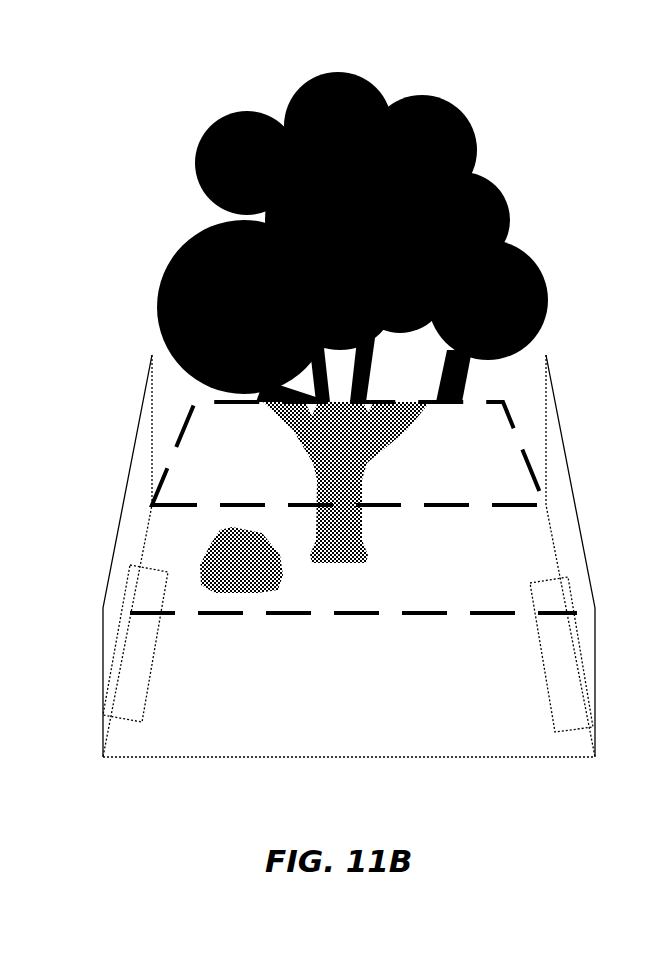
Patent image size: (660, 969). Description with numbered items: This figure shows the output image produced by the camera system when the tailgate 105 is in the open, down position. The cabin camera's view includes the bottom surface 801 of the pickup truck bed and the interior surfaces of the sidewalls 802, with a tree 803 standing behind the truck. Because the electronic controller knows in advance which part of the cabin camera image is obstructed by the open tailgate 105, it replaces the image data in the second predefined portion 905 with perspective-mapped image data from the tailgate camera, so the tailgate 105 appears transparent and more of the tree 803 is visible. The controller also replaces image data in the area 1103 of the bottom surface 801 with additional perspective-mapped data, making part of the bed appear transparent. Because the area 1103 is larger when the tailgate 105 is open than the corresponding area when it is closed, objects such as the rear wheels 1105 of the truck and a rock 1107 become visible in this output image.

The tree 803 is at (204, 145).
The tailgate 105 is at (193, 422).
The second predefined portion 905 is at (500, 474).
The bottom surface of the bed 801 is at (530, 747).
The sidewalls 802 is at (115, 576).
The area 1103 is at (495, 585).
The rear wheels 1105 is at (148, 647).
The rock 1107 is at (268, 565).